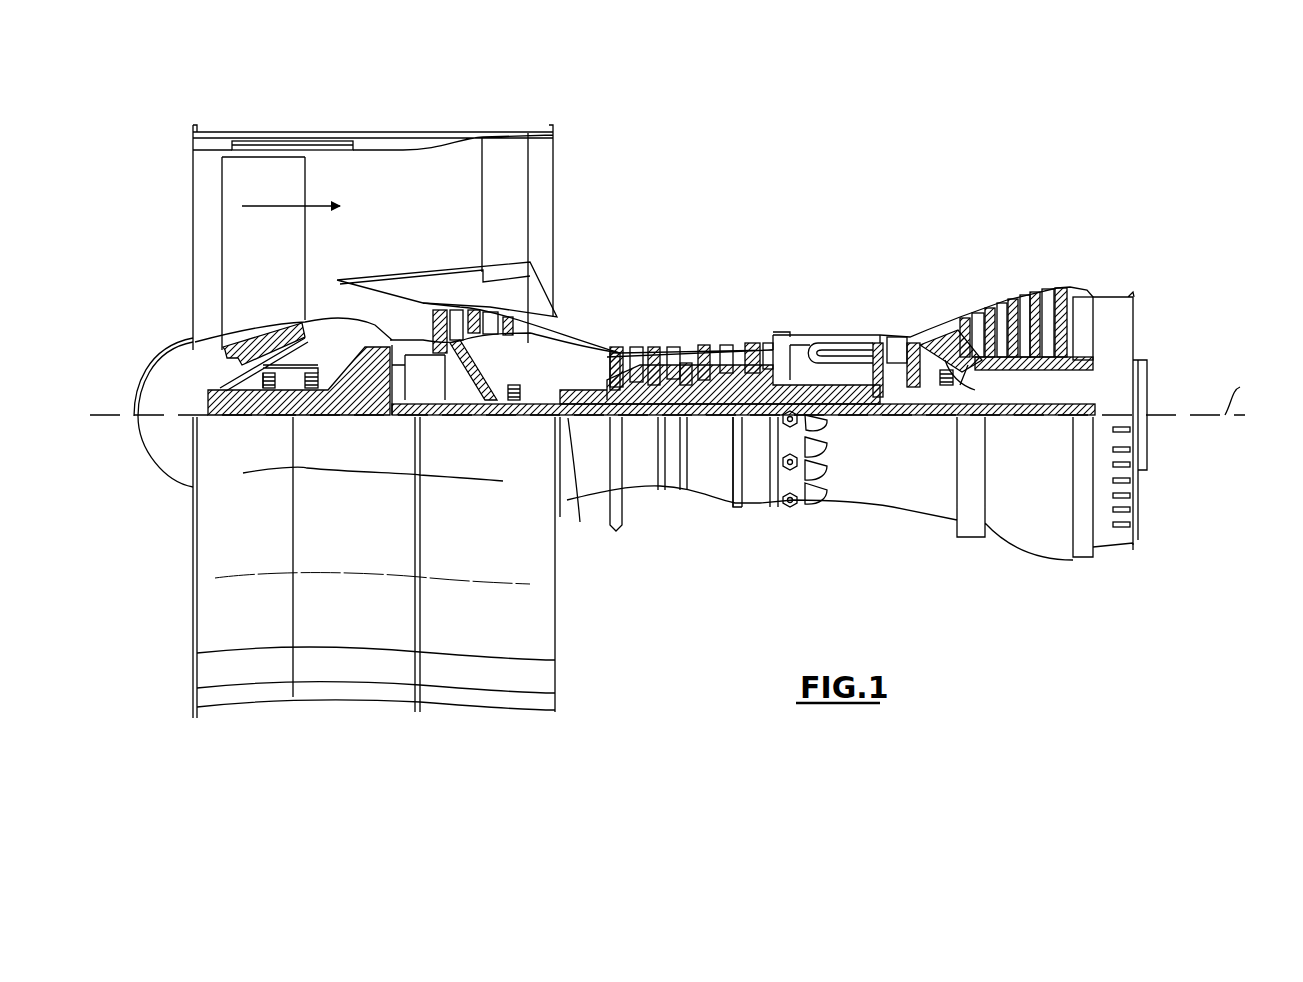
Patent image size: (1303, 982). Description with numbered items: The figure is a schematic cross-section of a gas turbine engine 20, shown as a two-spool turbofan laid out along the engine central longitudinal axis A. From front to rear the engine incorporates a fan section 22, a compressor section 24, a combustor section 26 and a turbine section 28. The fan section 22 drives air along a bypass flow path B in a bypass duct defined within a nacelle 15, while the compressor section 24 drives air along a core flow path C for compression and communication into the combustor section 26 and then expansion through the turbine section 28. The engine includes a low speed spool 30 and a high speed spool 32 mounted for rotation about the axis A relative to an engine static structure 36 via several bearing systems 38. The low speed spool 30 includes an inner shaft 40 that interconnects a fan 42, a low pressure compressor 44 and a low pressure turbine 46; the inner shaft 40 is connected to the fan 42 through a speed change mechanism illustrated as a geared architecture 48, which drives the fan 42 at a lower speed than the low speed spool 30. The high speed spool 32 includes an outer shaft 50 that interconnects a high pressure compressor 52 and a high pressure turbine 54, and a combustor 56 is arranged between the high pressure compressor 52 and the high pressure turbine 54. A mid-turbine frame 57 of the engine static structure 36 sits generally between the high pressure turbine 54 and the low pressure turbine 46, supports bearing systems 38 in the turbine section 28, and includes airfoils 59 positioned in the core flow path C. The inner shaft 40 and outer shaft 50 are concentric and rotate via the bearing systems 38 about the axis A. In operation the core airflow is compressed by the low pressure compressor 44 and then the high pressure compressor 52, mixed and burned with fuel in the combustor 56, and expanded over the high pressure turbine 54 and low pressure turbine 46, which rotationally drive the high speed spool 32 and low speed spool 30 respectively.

The nacelle 15 is at (377, 138).
The gas turbine engine 20 is at (834, 185).
The fan section 22 is at (303, 125).
The compressor section 24 is at (607, 323).
The combustor section 26 is at (828, 310).
The turbine section 28 is at (977, 275).
The low speed spool 30 is at (714, 420).
The high speed spool 32 is at (753, 380).
The engine static structure 36 is at (754, 505).
The bearing systems 38 is at (507, 400).
The inner shaft 40 is at (580, 520).
The fan 42 is at (278, 260).
The low pressure compressor 44 is at (473, 327).
The low pressure turbine 46 is at (1023, 310).
The geared architecture 48 is at (382, 397).
The outer shaft 50 is at (838, 400).
The high pressure compressor 52 is at (687, 380).
The high pressure turbine 54 is at (893, 330).
The combustor 56 is at (827, 357).
The mid-turbine frame 57 is at (940, 323).
The airfoils 59 is at (963, 380).
The engine central longitudinal axis A is at (1241, 396).
The bypass flow path B is at (277, 203).
The core flow path C is at (378, 313).